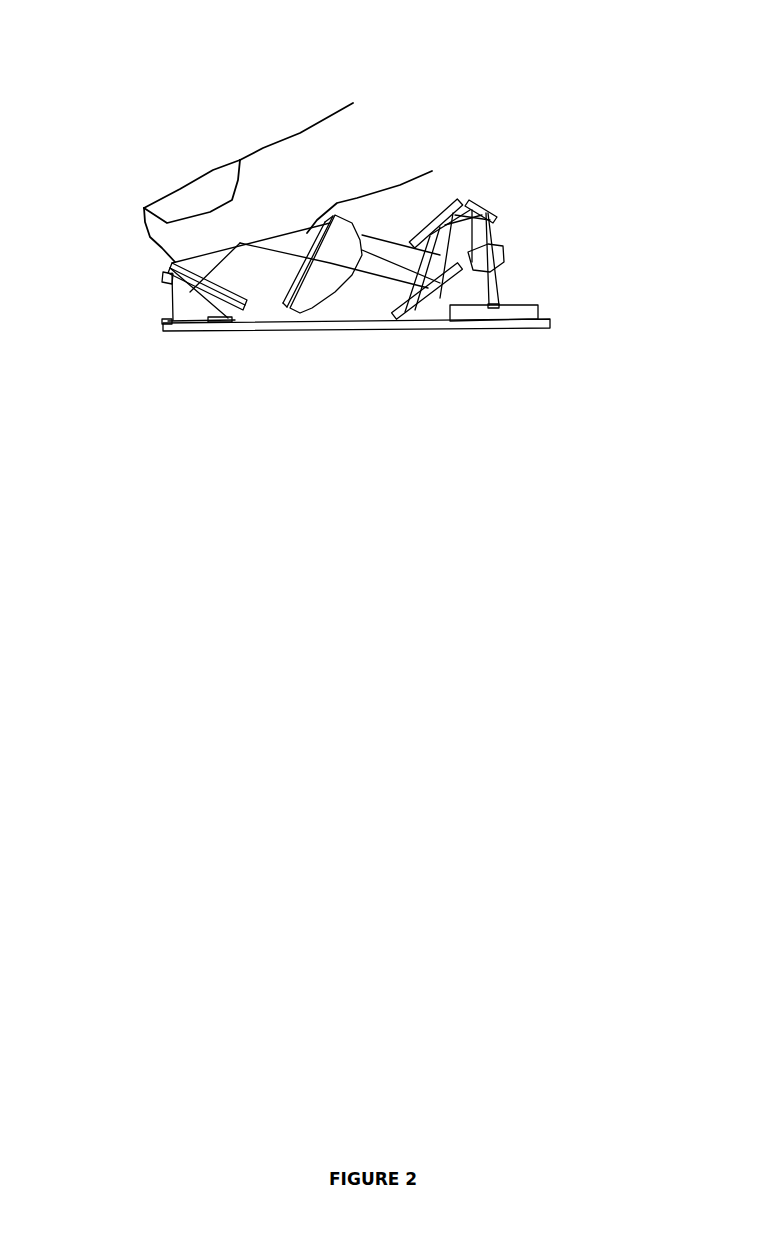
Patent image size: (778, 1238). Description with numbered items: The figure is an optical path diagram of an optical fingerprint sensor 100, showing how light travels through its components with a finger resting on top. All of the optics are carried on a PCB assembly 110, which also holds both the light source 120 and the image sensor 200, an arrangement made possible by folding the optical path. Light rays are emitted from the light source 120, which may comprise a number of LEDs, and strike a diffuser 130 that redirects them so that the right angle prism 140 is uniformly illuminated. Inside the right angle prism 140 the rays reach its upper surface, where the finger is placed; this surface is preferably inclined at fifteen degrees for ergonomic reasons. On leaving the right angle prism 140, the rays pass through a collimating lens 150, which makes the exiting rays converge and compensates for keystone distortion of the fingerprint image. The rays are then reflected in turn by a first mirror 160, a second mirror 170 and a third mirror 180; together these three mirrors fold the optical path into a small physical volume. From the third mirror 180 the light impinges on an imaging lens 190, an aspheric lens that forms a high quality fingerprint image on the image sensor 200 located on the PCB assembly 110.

The optical fingerprint sensor 100 is at (362, 30).
The PCB assembly 110 is at (487, 330).
The light source 120 is at (165, 330).
The diffuser 130 is at (161, 277).
The right angle prism 140 is at (173, 262).
The collimating lens 150 is at (297, 325).
The first mirror 160 is at (412, 320).
The second mirror 170 is at (450, 200).
The third mirror 180 is at (497, 213).
The imaging lens 190 is at (508, 248).
The image sensor 200 is at (680, 275).